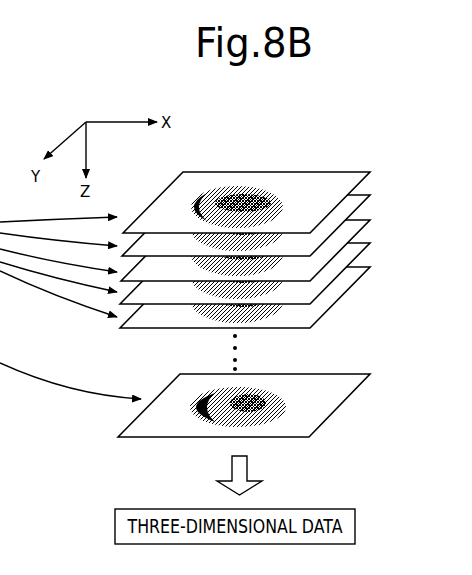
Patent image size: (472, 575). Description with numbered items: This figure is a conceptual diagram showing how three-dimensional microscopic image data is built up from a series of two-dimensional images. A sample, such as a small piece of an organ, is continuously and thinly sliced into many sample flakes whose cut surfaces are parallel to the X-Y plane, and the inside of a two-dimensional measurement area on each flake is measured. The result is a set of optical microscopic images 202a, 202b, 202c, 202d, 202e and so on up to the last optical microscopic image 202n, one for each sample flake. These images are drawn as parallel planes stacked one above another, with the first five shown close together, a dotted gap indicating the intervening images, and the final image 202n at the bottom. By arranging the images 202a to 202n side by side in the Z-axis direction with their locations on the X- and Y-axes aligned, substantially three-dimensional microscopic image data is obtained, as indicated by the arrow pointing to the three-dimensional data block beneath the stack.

The optical microscopic image 202a is at (365, 176).
The optical microscopic image 202b is at (365, 200).
The optical microscopic image 202c is at (365, 225).
The optical microscopic image 202d is at (365, 248).
The optical microscopic image 202e is at (365, 272).
The optical microscopic image 202n is at (361, 383).